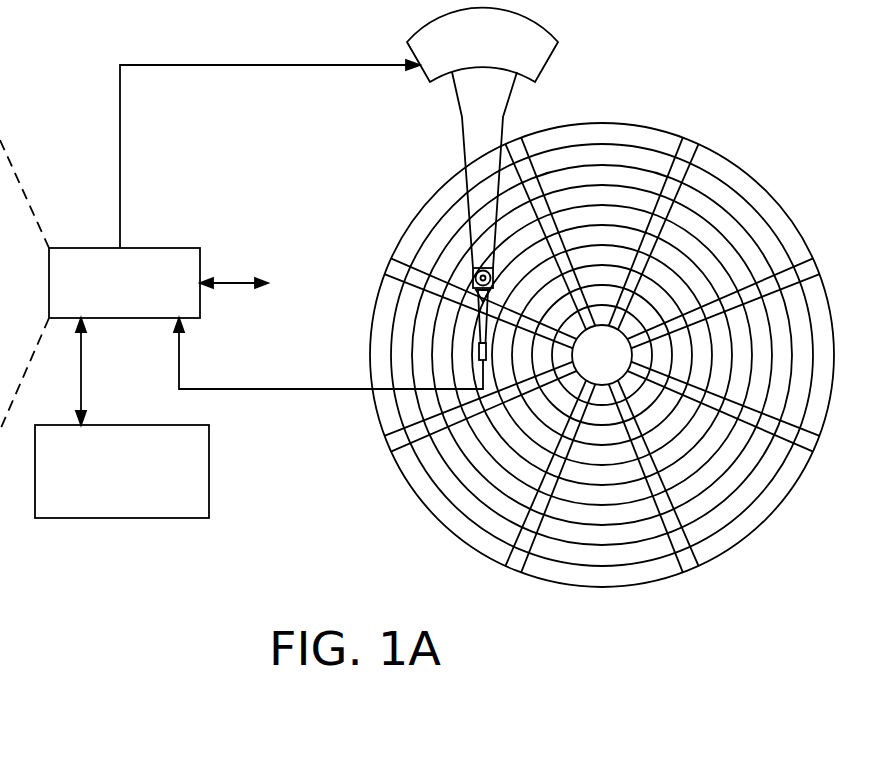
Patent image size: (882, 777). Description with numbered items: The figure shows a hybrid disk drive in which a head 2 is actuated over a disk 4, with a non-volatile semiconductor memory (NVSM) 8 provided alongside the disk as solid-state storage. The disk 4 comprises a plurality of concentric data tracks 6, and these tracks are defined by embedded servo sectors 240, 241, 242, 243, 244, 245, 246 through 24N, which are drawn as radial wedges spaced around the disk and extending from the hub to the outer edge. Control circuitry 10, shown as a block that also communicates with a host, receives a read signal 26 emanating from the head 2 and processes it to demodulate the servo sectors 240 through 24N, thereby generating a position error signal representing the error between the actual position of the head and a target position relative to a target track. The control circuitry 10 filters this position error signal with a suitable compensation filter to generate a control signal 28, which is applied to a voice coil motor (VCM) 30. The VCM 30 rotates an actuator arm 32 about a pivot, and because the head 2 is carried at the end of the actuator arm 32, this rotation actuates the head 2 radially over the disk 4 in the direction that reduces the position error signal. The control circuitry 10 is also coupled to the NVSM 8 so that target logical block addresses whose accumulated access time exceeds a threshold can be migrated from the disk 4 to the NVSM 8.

The head 2 is at (468, 360).
The disk 4 is at (766, 173).
The data tracks 6 is at (606, 148).
The non-volatile semiconductor memory (NVSM) 8 is at (209, 471).
The control circuitry 10 is at (164, 248).
The servo sector 24N is at (520, 146).
The servo sector 240 is at (694, 146).
The servo sector 241 is at (808, 272).
The servo sector 242 is at (808, 446).
The servo sector 243 is at (685, 564).
The servo sector 244 is at (513, 564).
The servo sector 245 is at (392, 446).
The servo sector 246 is at (396, 265).
The read signal 26 is at (265, 388).
The control signal 28 is at (120, 140).
The voice coil motor (VCM) 30 is at (425, 76).
The actuator arm 32 is at (463, 155).